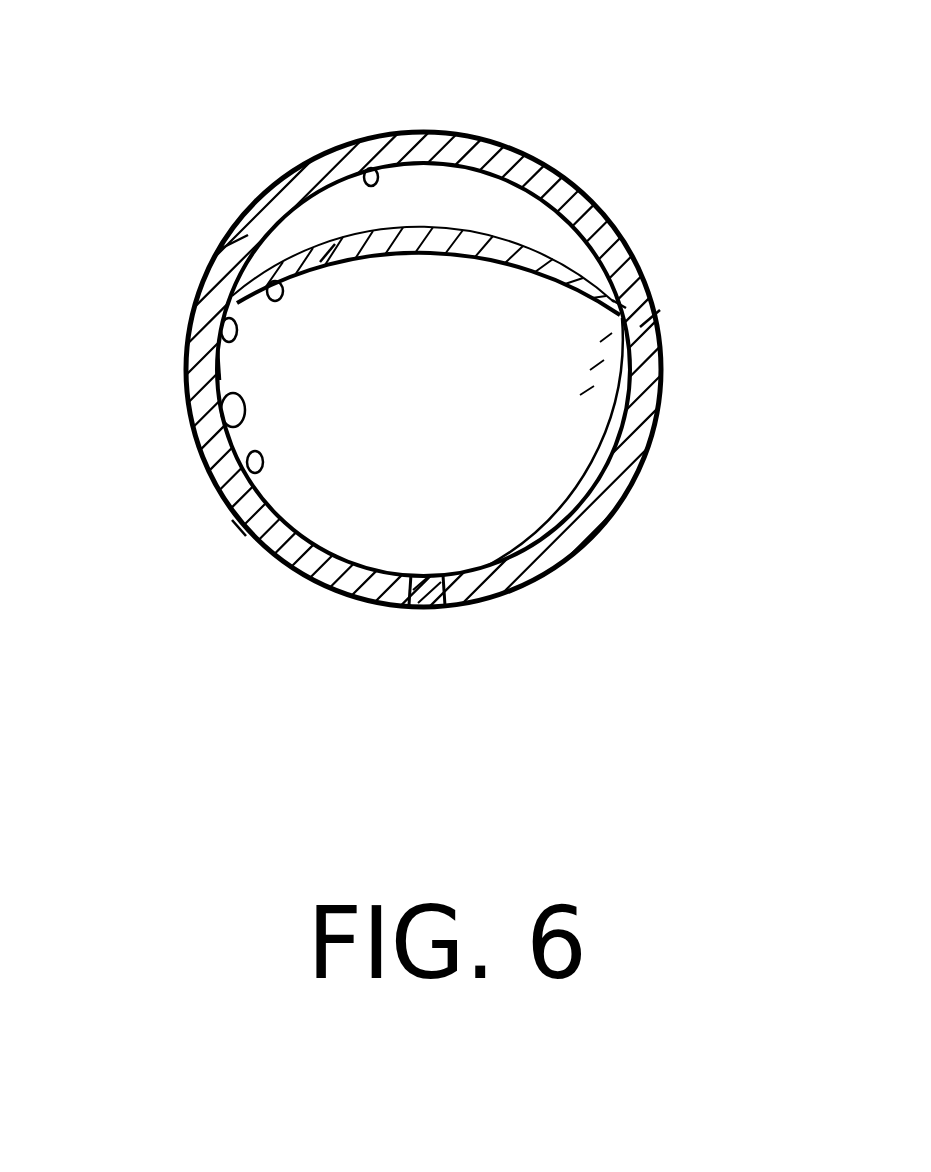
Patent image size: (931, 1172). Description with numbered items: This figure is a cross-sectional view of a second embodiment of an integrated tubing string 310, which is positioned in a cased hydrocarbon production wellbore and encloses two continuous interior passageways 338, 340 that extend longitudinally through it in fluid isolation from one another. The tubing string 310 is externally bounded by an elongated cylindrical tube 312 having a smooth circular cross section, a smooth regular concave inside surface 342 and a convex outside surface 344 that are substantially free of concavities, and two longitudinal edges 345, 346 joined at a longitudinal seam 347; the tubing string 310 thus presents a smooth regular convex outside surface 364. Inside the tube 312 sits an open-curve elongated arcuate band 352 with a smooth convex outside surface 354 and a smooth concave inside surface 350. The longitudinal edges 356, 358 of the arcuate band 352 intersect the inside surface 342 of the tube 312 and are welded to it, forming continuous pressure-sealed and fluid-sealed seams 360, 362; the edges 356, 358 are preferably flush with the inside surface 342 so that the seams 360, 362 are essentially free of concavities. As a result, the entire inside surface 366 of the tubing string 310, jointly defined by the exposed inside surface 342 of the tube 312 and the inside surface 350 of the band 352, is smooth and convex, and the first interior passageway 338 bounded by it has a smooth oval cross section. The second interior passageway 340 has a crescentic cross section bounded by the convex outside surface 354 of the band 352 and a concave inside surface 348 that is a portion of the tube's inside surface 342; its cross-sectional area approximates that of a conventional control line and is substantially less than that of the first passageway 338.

The integrated tubing string 310 is at (660, 350).
The elongated cylindrical tube 312 is at (650, 443).
The first interior passageway 338 is at (520, 520).
The second interior passageway 340 is at (482, 193).
The inside surface of the tube 342 is at (210, 492).
The outside surface of the tube 344 is at (233, 517).
The longitudinal edge of the tube 345 is at (447, 585).
The longitudinal edge of the tube 346 is at (410, 612).
The longitudinal seam 347 is at (424, 612).
The concave inside surface 348 is at (371, 168).
The inside surface of the band 350 is at (222, 248).
The arcuate band 352 is at (300, 212).
The outside surface of the band 354 is at (327, 250).
The longitudinal edge of the band 356 is at (620, 300).
The longitudinal edge of the band 358 is at (195, 320).
The seam 360 is at (640, 327).
The seam 362 is at (197, 363).
The outside surface of the tubing string 364 is at (600, 523).
The inside surface of the tubing string 366 is at (203, 430).